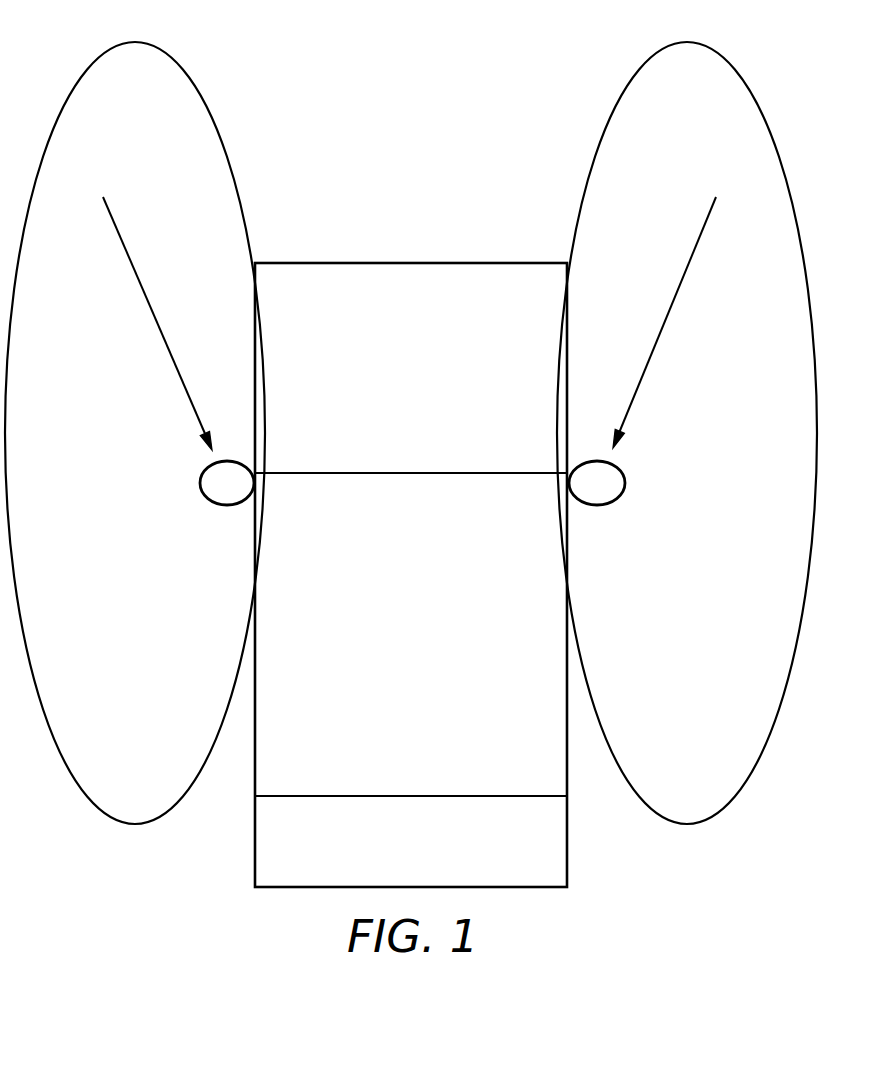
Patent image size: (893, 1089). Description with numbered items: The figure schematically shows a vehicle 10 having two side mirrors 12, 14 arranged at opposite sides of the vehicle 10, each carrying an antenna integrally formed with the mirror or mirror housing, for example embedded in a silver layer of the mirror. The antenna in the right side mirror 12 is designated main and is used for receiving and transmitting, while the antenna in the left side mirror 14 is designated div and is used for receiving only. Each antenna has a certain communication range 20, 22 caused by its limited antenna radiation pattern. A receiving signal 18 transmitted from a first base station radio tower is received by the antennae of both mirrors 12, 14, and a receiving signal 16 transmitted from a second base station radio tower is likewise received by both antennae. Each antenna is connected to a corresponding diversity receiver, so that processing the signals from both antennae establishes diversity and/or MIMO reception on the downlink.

The vehicle 10 is at (410, 272).
The side mirror 12 is at (617, 501).
The side mirror 14 is at (208, 503).
The receiving signal 16 is at (685, 275).
The receiving signal 18 is at (138, 272).
The communication range 20 is at (687, 825).
The communication range 22 is at (133, 824).